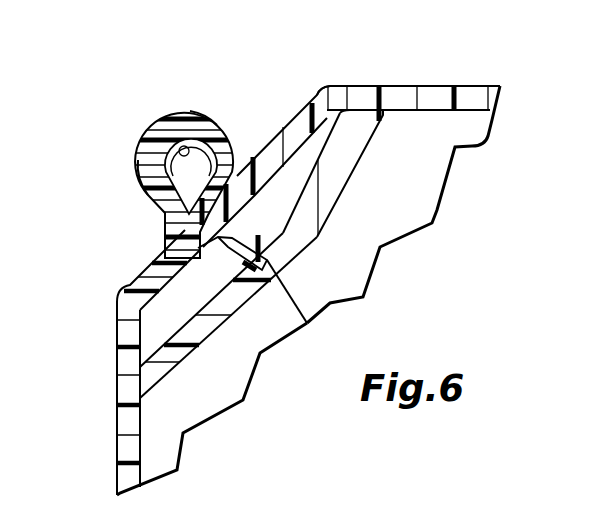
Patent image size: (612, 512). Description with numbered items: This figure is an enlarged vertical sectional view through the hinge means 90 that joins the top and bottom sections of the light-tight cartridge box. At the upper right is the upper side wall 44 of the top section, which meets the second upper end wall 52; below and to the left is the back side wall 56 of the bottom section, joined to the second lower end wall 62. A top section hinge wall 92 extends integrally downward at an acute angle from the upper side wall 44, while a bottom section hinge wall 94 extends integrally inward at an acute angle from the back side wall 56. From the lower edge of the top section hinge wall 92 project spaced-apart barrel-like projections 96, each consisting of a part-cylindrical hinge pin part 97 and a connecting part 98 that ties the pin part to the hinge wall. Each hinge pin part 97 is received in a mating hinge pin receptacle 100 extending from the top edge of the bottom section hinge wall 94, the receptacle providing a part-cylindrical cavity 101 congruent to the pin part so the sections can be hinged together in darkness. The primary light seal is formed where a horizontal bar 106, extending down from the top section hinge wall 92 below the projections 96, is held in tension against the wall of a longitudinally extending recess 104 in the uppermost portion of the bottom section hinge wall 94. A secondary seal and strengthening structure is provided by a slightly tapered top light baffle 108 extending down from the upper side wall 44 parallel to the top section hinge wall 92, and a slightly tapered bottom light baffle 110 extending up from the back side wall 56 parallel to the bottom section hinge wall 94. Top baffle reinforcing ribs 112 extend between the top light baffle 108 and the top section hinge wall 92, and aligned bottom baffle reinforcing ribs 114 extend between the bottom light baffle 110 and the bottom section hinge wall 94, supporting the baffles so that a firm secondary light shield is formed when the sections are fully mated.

The upper side wall 44 is at (473, 92).
The second upper end wall 52 is at (430, 187).
The back side wall 56 is at (127, 420).
The second lower end wall 62 is at (214, 400).
The hinge means 90 is at (195, 94).
The top section hinge wall 92 is at (326, 96).
The bottom section hinge wall 94 is at (150, 272).
The barrel-like projection 96 is at (155, 152).
The part-cylindrical hinge pin part 97 is at (150, 130).
The connecting part 98 is at (190, 185).
The hinge pin receptacle 100 is at (152, 175).
The part-cylindrical cavity 101 is at (217, 125).
The recess 104 is at (160, 252).
The horizontal bar 106 is at (202, 214).
The top light baffle 108 is at (322, 178).
The bottom light baffle 110 is at (215, 303).
The top baffle reinforcing rib 112 is at (350, 117).
The bottom baffle reinforcing rib 114 is at (153, 325).